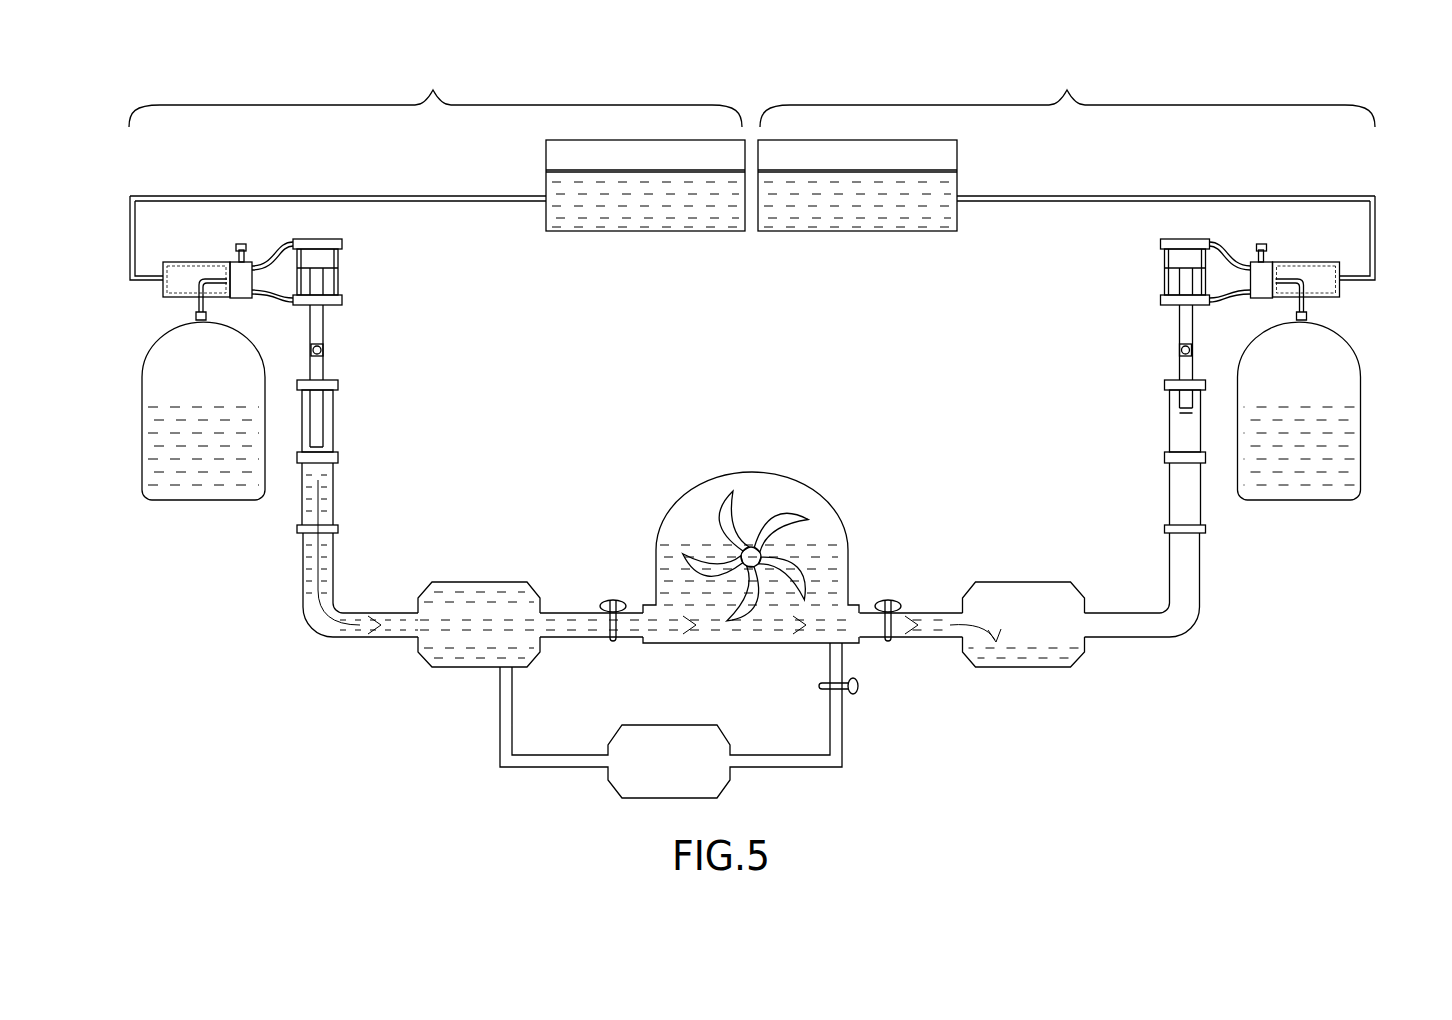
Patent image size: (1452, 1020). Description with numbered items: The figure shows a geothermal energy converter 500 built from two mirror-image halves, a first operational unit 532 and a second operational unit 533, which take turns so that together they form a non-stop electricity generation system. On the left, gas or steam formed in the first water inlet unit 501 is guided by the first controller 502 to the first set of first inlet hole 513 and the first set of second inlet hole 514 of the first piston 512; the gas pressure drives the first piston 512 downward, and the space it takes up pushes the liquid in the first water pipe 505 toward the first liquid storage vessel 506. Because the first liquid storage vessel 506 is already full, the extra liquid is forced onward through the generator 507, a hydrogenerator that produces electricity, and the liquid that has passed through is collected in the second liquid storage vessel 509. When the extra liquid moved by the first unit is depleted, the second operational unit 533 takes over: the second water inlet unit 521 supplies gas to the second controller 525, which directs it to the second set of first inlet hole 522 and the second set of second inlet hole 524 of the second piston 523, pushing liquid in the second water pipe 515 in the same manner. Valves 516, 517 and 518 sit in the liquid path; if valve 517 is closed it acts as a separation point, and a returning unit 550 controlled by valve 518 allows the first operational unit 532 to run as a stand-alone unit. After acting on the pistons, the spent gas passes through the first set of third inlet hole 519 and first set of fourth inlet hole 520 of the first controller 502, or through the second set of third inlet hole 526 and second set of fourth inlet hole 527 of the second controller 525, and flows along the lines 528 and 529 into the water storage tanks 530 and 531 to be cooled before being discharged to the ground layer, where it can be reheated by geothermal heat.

The geothermal energy converter 500 is at (1268, 33).
The first water inlet unit 501 is at (142, 448).
The first controller 502 is at (241, 244).
The first water pipe 505 is at (352, 584).
The first liquid storage vessel 506 is at (475, 583).
The generator 507 is at (765, 469).
The second liquid storage vessel 509 is at (1050, 667).
The first piston 512 is at (338, 270).
The first set of first inlet hole 513 is at (342, 243).
The first set of second inlet hole 514 is at (342, 300).
The second water pipe 515 is at (1219, 583).
The valve 516 is at (613, 598).
The valve 517 is at (888, 598).
The valve 518 is at (859, 695).
The first set of third inlet hole 519 is at (167, 262).
The first set of fourth inlet hole 520 is at (182, 298).
The second water inlet unit 521 is at (1362, 450).
The second set of first inlet hole 522 is at (1161, 243).
The second piston 523 is at (1165, 268).
The second set of second inlet hole 524 is at (1161, 300).
The second controller 525 is at (1262, 244).
The second set of third inlet hole 526 is at (1338, 262).
The second set of fourth inlet hole 527 is at (1318, 298).
The first supply line 528 is at (313, 196).
The second supply line 529 is at (1190, 196).
The water storage tank 530 is at (660, 232).
The water storage tank 531 is at (845, 232).
The first operational unit 532 is at (435, 93).
The second operational unit 533 is at (1067, 93).
The returning unit 550 is at (758, 786).